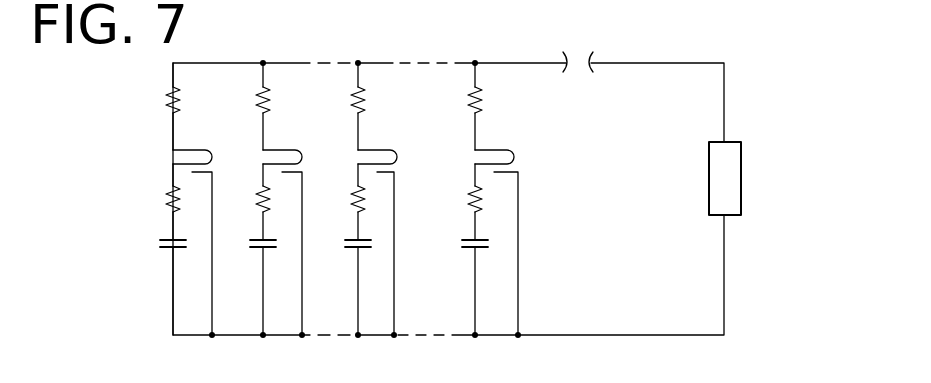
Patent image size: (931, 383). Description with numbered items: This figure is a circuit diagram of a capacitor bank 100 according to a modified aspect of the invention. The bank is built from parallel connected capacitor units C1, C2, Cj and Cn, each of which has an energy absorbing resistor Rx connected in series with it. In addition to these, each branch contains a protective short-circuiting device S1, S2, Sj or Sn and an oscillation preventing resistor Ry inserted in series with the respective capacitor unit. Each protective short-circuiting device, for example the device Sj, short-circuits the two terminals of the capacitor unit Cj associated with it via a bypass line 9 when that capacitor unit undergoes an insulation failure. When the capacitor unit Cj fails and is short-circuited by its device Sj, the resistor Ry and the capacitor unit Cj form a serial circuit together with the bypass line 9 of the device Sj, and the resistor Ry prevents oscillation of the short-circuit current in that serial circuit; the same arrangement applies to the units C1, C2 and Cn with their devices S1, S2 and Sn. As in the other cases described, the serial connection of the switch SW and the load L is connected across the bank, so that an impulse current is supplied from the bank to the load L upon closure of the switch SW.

The bypass line 9 is at (212, 282).
The pulse generating circuit 100 is at (447, 204).
The switch SW is at (578, 49).
The load L is at (736, 178).
The energy absorbing resistor Rx is at (307, 101).
The oscillation preventing resistor Ry is at (308, 200).
The protective short-circuiting device S1 is at (172, 158).
The protective short-circuiting device S2 is at (263, 158).
The protective short-circuiting device Sj is at (362, 158).
The protective short-circuiting device Sn is at (476, 158).
The capacitor unit C1 is at (158, 245).
The capacitor unit C2 is at (249, 245).
The capacitor unit Cj is at (348, 245).
The capacitor unit Cn is at (458, 245).